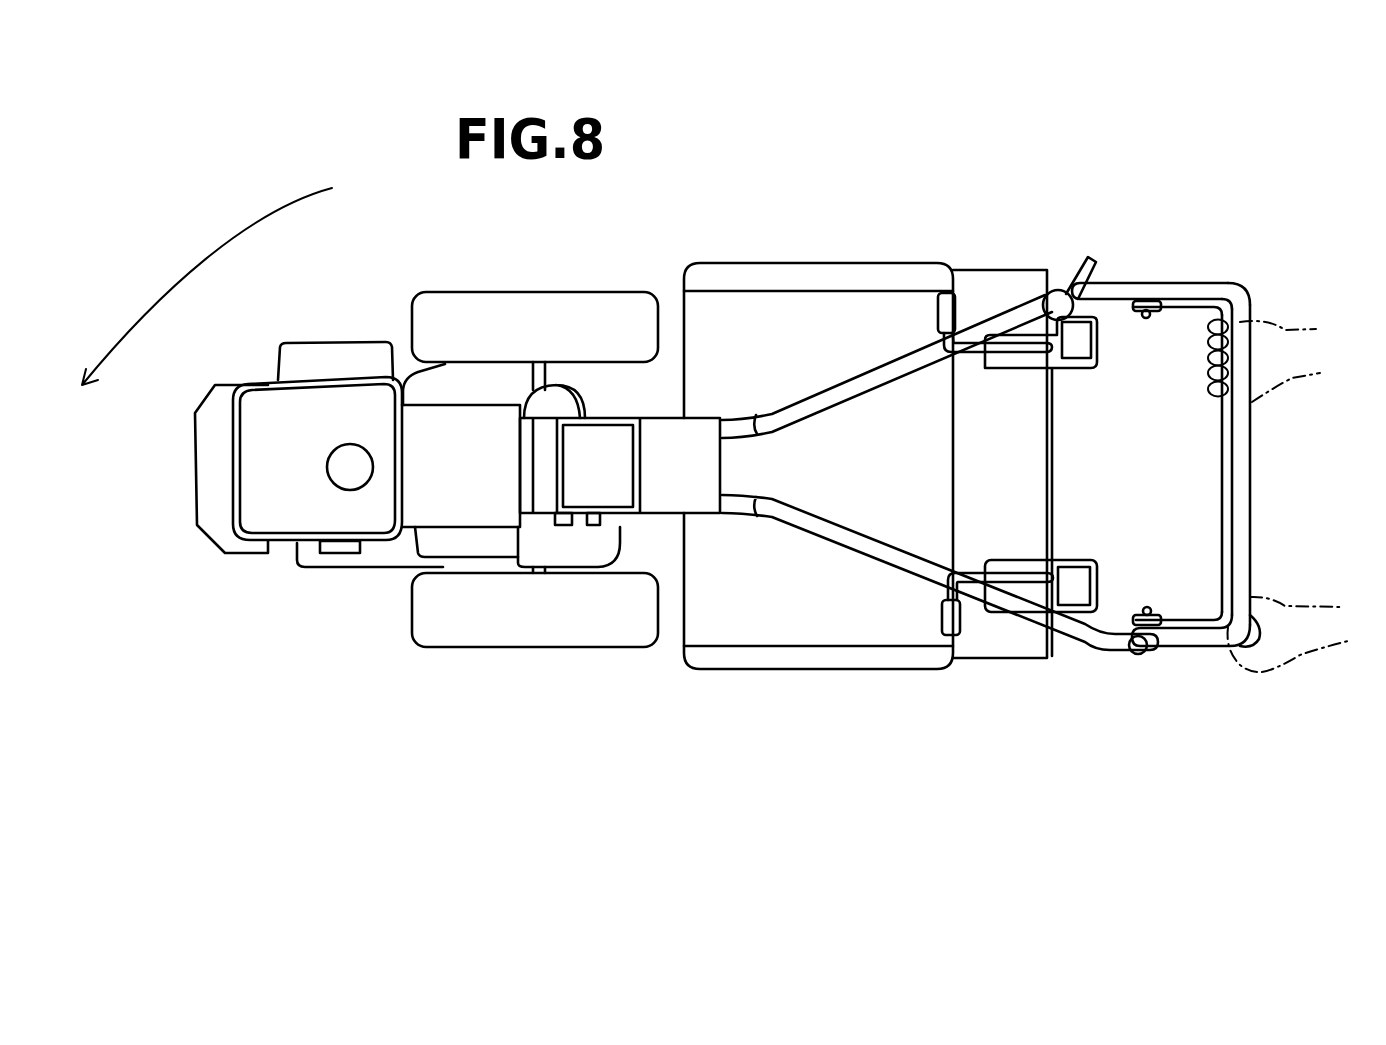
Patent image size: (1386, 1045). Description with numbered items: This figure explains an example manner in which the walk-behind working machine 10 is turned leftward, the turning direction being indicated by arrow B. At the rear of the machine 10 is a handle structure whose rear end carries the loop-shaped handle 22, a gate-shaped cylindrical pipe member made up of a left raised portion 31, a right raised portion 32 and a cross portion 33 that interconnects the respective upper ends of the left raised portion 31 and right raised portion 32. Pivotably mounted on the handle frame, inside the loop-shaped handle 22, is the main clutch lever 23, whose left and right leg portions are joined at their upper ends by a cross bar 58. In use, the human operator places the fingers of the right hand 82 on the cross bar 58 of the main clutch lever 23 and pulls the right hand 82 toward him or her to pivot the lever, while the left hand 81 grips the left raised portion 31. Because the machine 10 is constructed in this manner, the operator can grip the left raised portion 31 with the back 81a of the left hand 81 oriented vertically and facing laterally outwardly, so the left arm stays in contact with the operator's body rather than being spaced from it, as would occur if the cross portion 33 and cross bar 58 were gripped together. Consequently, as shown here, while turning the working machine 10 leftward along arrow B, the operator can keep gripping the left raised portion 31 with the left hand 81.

The walk-behind cultivating machine 10 is at (769, 212).
The loop-shaped handle 22 is at (1193, 270).
The main clutch lever 23 is at (1204, 456).
The right raised portion 32 is at (1240, 292).
The cross portion 33 is at (1247, 460).
The left raised portion 31 is at (1260, 617).
The cross bar 58 is at (1220, 495).
The right hand 82 is at (1266, 334).
The left hand 81 is at (1305, 650).
The back of the left hand 81a is at (1267, 667).
The arrow B is at (207, 286).